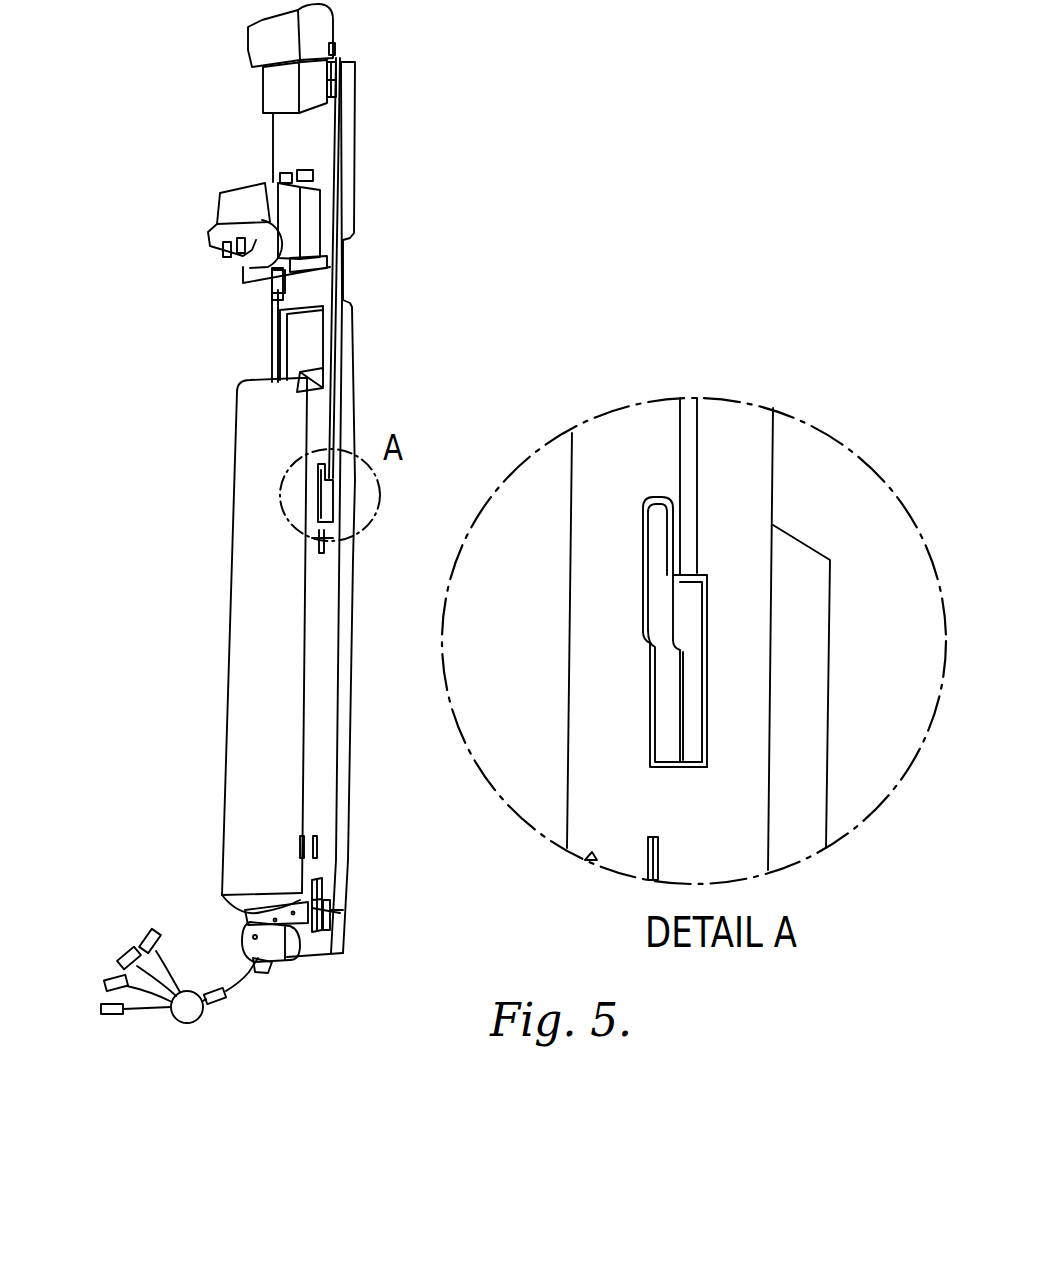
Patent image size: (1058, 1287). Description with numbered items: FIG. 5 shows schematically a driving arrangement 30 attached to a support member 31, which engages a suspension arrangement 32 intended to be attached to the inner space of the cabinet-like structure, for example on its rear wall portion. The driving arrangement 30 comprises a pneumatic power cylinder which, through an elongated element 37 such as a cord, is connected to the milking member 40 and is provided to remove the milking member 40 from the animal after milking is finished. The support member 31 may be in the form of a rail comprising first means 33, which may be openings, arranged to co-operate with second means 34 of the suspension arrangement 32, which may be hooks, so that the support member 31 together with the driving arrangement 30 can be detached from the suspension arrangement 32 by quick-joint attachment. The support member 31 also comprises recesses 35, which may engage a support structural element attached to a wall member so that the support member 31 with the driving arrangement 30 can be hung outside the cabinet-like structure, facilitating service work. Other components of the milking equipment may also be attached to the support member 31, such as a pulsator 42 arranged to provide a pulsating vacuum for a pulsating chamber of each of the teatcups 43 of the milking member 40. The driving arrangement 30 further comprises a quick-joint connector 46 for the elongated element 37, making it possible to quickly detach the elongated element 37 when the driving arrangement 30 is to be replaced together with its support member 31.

The driving arrangement 30 is at (257, 622).
The support member 31 is at (326, 810).
The suspension arrangement 32 is at (343, 632).
The first means 33 is at (340, 905).
The second means 34 is at (347, 876).
The recesses 35 is at (347, 268).
The elongated element 37 is at (243, 982).
The milking member 40 is at (173, 1030).
The pulsator 42 is at (230, 210).
The teatcups 43 is at (156, 935).
The quick-joint connector 46 is at (217, 1005).